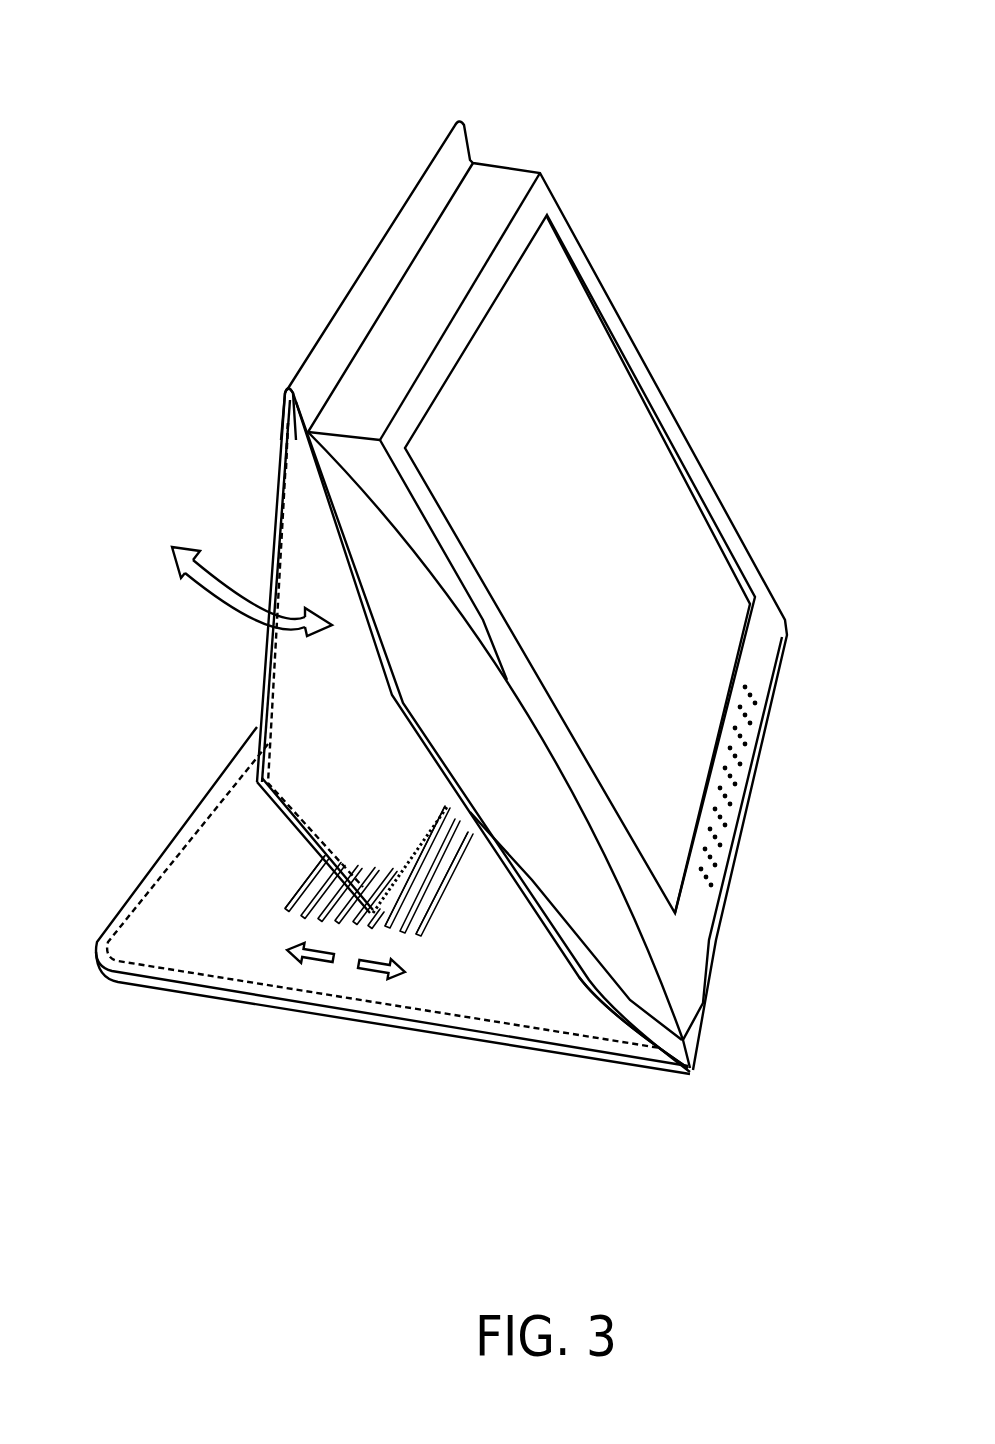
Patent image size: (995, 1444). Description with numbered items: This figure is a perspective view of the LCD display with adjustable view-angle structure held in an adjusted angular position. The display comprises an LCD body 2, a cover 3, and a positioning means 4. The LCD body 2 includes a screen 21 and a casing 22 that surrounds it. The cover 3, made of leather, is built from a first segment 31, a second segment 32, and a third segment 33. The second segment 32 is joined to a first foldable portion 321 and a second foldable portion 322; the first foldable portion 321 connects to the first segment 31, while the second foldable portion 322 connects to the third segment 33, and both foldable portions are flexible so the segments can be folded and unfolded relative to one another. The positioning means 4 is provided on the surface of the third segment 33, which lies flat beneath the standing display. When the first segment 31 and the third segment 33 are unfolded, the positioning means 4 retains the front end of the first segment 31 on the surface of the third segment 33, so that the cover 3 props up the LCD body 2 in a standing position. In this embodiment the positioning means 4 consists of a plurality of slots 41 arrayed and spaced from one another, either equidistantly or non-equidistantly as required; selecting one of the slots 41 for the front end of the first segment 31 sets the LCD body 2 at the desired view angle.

The LCD body 2 is at (537, 535).
The screen 21 is at (565, 302).
The casing 22 is at (513, 178).
The cover 3 is at (364, 743).
The first segment 31 is at (297, 522).
The second segment 32 is at (330, 567).
The first foldable portion 321 is at (293, 458).
The second foldable portion 322 is at (598, 997).
The third segment 33 is at (232, 798).
The positioning means 4 is at (307, 893).
The slots 41 is at (376, 870).